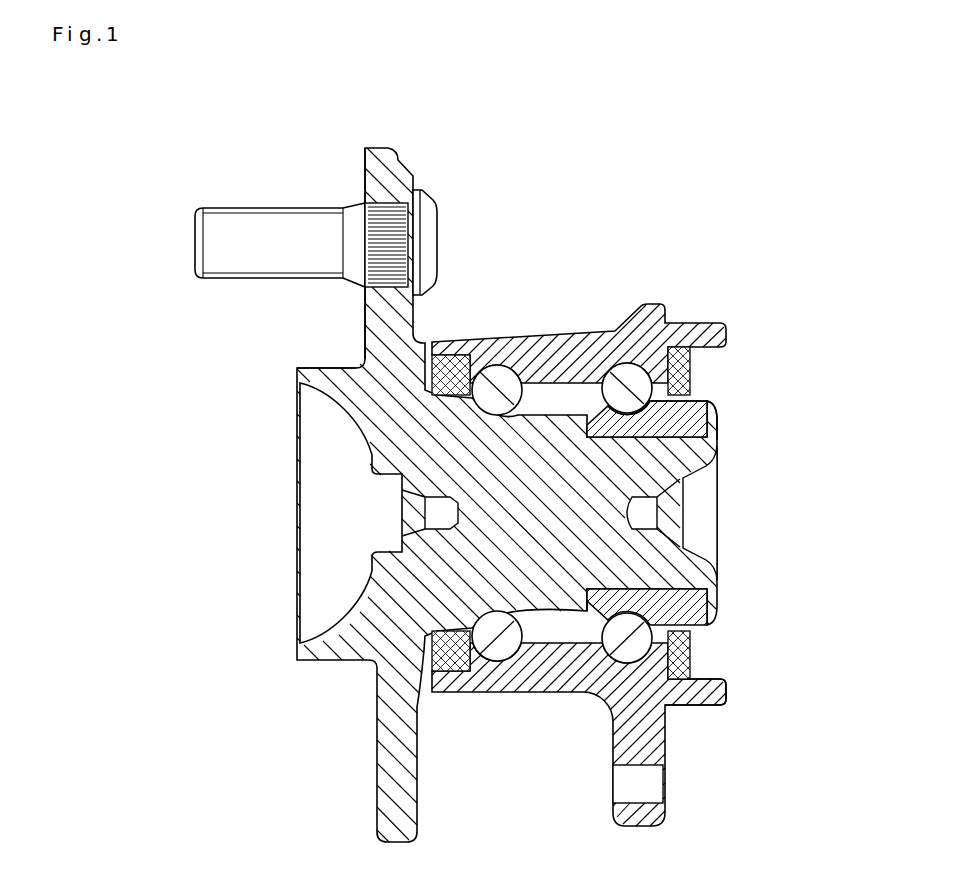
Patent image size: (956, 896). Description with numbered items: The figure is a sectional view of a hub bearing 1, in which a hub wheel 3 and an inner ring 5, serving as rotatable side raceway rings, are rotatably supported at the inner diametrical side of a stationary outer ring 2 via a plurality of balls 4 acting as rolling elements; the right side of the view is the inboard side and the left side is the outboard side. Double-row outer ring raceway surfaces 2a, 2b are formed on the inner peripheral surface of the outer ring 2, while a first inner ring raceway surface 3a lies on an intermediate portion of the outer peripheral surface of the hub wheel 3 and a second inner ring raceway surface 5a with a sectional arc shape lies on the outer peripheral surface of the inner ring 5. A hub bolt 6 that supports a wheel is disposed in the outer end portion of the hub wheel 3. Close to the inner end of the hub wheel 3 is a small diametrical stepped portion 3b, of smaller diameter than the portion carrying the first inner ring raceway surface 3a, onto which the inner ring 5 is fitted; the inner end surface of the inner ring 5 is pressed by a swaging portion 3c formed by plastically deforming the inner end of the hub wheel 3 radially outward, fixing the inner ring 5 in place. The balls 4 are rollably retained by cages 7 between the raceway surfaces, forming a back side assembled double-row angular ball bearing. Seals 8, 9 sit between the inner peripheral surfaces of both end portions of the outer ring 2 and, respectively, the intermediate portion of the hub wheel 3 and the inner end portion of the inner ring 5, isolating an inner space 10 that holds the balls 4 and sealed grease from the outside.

The hub bearing 1 is at (736, 292).
The outer ring 2 is at (607, 688).
The outer ring raceway surface 2a is at (482, 694).
The outer ring raceway surface 2b is at (665, 745).
The hub wheel 3 is at (365, 333).
The first inner ring raceway surface 3a is at (478, 406).
The small diametrical stepped portion 3b is at (637, 581).
The swaging portion 3c is at (720, 428).
The balls 4 is at (578, 338).
The inner ring 5 is at (710, 622).
The second inner ring raceway surface 5a is at (690, 390).
The hub bolt 6 is at (232, 248).
The cage 7 is at (492, 372).
The seal 8 is at (437, 668).
The seal 9 is at (690, 673).
The inner space 10 is at (705, 470).